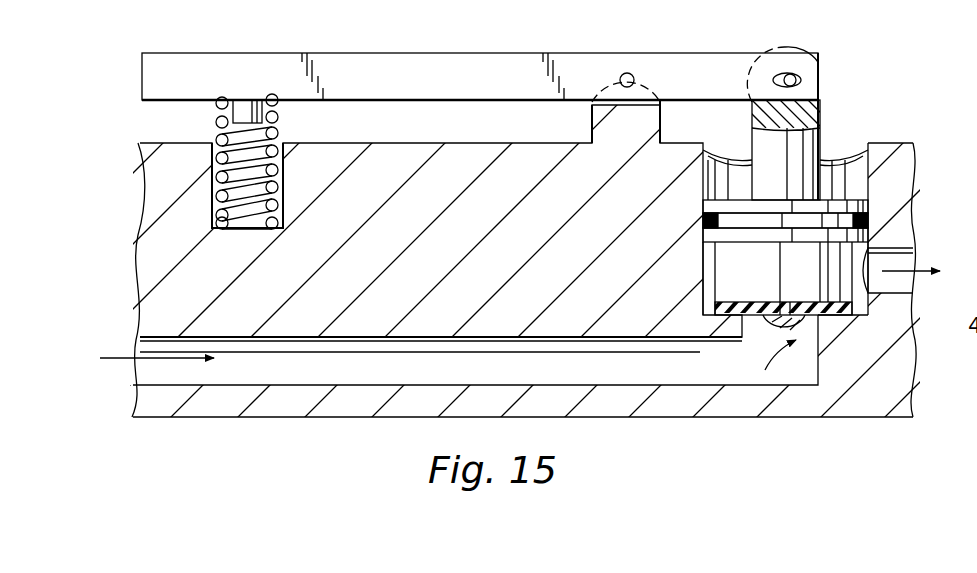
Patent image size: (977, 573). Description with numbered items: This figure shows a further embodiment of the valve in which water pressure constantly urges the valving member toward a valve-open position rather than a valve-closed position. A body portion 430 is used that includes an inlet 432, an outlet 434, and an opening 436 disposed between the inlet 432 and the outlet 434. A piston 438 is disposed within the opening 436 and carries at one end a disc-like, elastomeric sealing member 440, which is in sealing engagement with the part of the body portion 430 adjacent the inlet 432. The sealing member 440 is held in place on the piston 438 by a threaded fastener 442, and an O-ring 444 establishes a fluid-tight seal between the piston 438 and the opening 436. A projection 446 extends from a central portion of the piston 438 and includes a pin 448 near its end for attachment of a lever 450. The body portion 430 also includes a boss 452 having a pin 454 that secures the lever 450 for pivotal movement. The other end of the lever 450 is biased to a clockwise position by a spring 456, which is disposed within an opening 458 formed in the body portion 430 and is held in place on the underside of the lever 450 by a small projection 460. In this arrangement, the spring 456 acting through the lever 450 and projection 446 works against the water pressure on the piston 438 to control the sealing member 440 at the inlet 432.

The body portion 430 is at (157, 182).
The inlet 432 is at (147, 346).
The outlet 434 is at (913, 250).
The opening 436 is at (867, 180).
The piston 438 is at (710, 203).
The sealing member 440 is at (712, 308).
The threaded fastener 442 is at (802, 323).
The O-ring 444 is at (703, 218).
The projection 446 is at (808, 138).
The pin 448 is at (798, 74).
The lever 450 is at (462, 65).
The boss 452 is at (598, 127).
The pin 454 is at (632, 75).
The spring 456 is at (273, 137).
The opening 458 is at (280, 177).
The small projection 460 is at (240, 107).